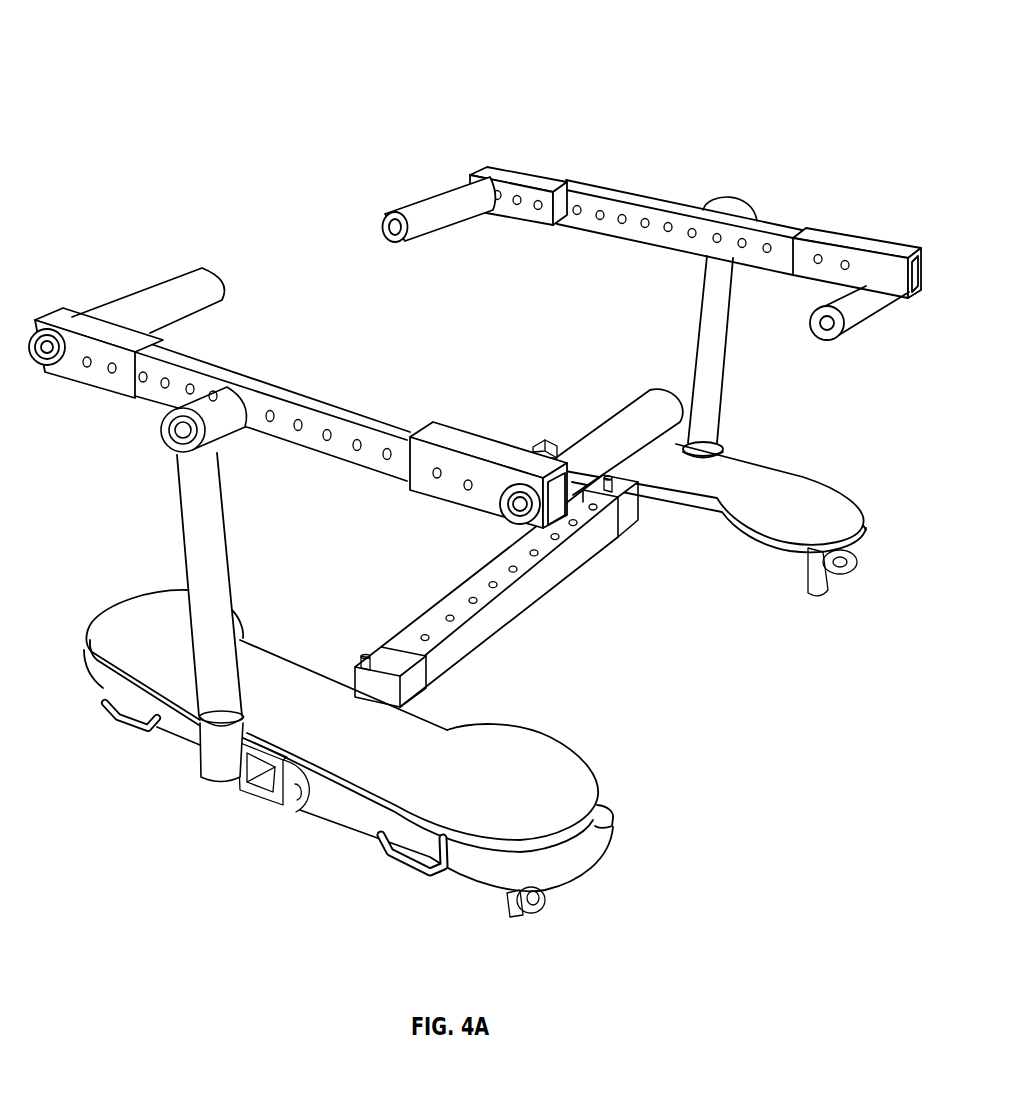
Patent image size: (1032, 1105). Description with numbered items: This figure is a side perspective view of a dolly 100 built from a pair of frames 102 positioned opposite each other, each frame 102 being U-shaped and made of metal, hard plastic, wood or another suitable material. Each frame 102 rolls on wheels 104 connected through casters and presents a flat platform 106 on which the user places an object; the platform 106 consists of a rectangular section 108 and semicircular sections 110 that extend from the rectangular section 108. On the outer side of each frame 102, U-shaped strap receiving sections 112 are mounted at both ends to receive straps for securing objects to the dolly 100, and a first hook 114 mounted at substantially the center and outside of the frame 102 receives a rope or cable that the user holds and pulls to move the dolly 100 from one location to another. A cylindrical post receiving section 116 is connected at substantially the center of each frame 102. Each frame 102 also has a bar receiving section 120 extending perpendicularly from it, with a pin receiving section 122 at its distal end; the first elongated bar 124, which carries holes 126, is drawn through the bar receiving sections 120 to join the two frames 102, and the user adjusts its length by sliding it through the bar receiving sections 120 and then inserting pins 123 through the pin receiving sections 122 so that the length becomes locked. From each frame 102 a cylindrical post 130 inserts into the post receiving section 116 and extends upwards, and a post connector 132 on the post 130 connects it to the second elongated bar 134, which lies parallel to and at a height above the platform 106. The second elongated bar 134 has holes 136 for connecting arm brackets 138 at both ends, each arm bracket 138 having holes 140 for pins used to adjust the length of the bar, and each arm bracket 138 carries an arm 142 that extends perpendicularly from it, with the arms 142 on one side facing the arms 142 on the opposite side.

The dolly 100 is at (147, 70).
The frame 102 is at (863, 547).
The wheels 104 is at (813, 583).
The platform 106 is at (730, 484).
The rectangular section 108 is at (407, 740).
The semicircular sections 110 is at (507, 747).
The strap receiving sections 112 is at (113, 720).
The first hook 114 is at (263, 803).
The post receiving section 116 is at (217, 767).
The bar receiving section 120 is at (343, 672).
The pin receiving section 122 is at (368, 655).
The pin 123 is at (630, 490).
The first elongated bar 124 is at (507, 610).
The holes 126 is at (470, 598).
The post 130 is at (717, 307).
The post connector 132 is at (167, 430).
The second elongated bar 134 is at (375, 423).
The holes 136 is at (300, 413).
The arm bracket 138 is at (533, 178).
The holes 140 is at (513, 197).
The arm 142 is at (183, 290).